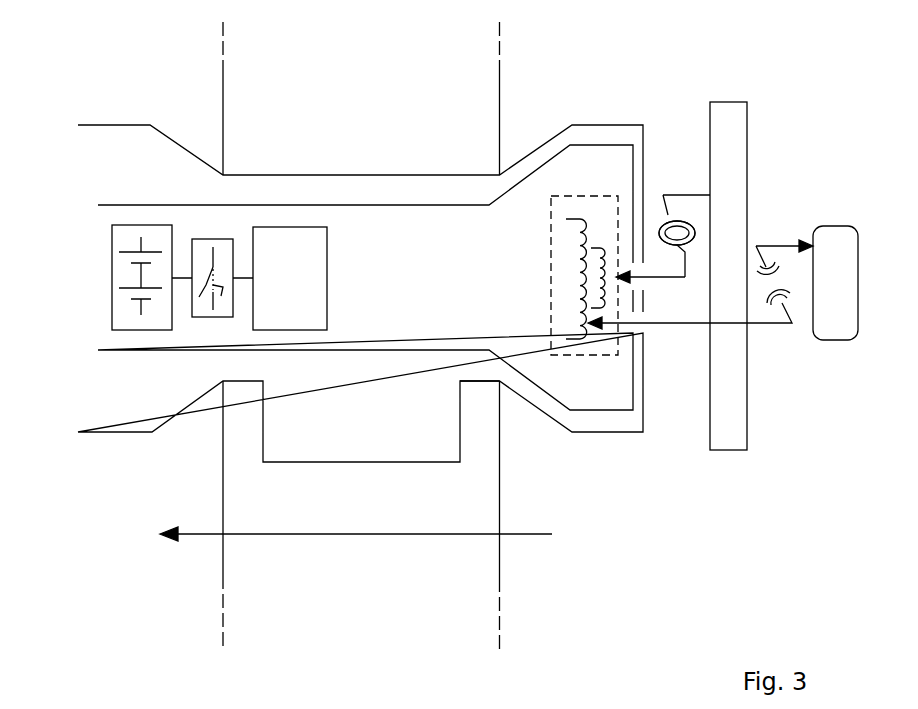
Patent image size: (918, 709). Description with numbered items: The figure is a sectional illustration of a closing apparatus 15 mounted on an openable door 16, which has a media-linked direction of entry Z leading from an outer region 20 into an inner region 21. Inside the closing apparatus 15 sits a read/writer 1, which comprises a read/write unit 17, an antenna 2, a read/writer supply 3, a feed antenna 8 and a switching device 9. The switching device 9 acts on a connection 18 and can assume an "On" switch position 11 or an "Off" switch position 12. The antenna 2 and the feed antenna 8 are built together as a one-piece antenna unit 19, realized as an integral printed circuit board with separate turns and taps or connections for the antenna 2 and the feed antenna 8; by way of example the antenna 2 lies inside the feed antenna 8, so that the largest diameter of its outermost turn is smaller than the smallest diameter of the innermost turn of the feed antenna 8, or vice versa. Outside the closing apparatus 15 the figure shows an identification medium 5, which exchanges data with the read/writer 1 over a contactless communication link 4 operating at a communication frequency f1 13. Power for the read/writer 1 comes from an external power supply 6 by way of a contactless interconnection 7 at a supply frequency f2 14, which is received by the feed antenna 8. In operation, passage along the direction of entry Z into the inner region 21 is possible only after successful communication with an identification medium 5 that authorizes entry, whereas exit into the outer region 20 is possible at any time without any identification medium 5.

The read/writer 1 is at (146, 205).
The antenna 2 is at (578, 217).
The read/writer supply 3 is at (125, 225).
The contactless communication link 4 is at (777, 246).
The identification medium 5 is at (833, 226).
The external power supply 6 is at (726, 102).
The contactless interconnection 7 is at (679, 195).
The feed antenna 8 is at (597, 245).
The switching device 9 is at (203, 239).
The On switch position 11 is at (223, 288).
The Off switch position 12 is at (205, 287).
The communication frequency f1 13 is at (697, 190).
The supply frequency f2 14 is at (677, 148).
The closing apparatus 15 is at (603, 432).
The door 16 is at (500, 442).
The read/write unit 17 is at (289, 227).
The connection 18 is at (243, 278).
The antenna unit 19 is at (561, 196).
The outer region 20 is at (760, 579).
The inner region 21 is at (315, 560).
The direction of entry z is at (522, 534).